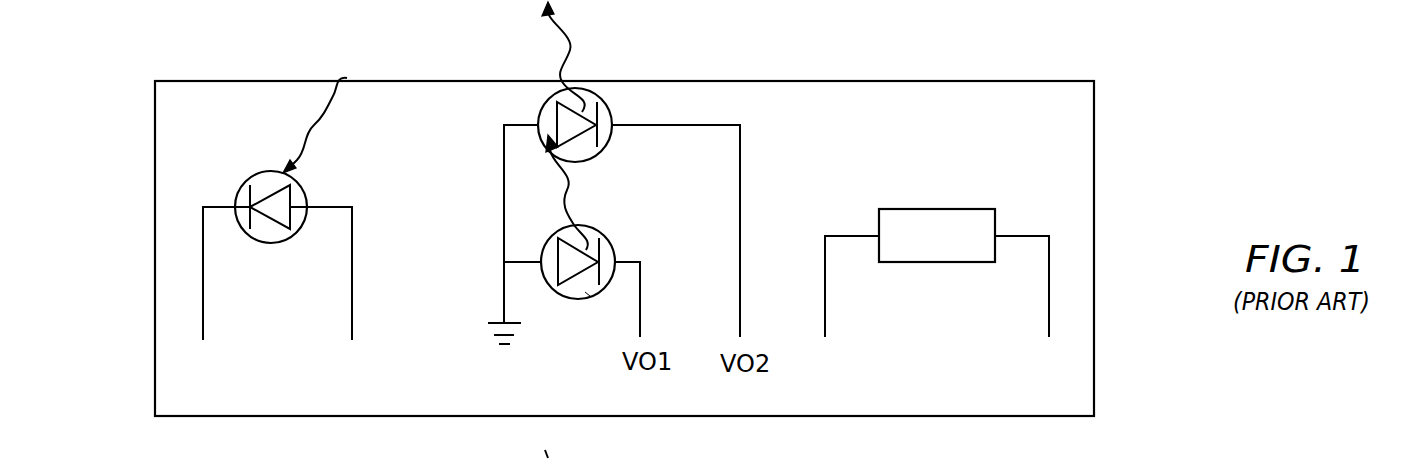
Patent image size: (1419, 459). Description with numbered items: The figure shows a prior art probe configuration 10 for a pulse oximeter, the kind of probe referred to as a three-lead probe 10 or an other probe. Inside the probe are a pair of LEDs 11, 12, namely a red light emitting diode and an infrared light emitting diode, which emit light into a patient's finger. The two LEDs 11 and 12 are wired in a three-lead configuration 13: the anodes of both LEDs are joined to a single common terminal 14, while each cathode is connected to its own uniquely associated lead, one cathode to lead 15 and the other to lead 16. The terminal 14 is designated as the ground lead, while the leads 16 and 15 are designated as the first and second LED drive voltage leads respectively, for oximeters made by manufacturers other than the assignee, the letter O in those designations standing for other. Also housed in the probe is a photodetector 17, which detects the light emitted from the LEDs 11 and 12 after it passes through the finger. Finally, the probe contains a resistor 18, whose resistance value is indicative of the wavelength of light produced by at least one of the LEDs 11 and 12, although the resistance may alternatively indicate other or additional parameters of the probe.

The probe configuration 10 is at (872, 66).
The LED 11 is at (603, 147).
The LED 12 is at (600, 236).
The 3-lead configuration 13 is at (593, 300).
The terminal 14 is at (500, 197).
The lead 15 is at (740, 205).
The lead 16 is at (640, 312).
The photodetector 17 is at (282, 243).
The resistor 18 is at (951, 265).